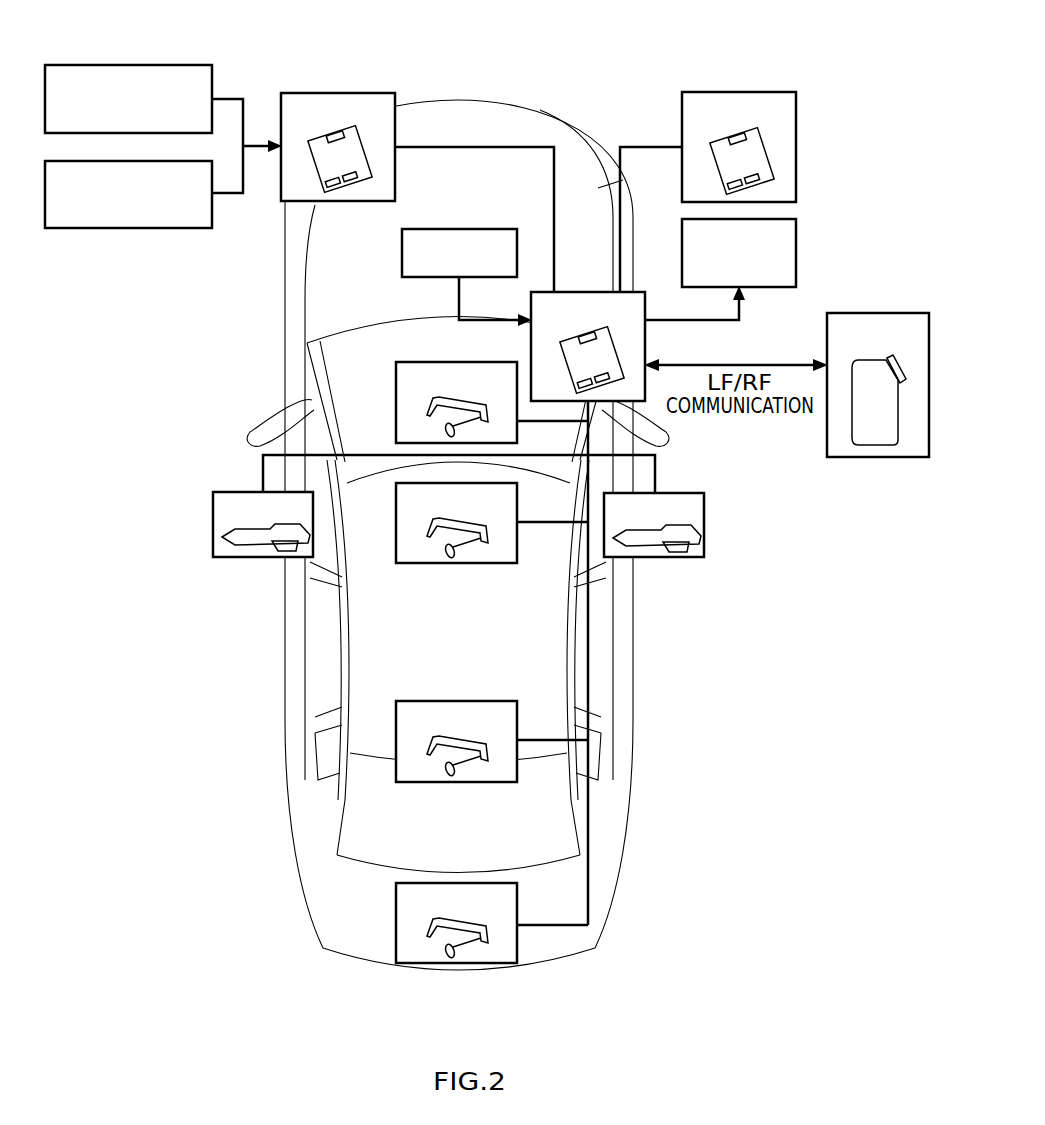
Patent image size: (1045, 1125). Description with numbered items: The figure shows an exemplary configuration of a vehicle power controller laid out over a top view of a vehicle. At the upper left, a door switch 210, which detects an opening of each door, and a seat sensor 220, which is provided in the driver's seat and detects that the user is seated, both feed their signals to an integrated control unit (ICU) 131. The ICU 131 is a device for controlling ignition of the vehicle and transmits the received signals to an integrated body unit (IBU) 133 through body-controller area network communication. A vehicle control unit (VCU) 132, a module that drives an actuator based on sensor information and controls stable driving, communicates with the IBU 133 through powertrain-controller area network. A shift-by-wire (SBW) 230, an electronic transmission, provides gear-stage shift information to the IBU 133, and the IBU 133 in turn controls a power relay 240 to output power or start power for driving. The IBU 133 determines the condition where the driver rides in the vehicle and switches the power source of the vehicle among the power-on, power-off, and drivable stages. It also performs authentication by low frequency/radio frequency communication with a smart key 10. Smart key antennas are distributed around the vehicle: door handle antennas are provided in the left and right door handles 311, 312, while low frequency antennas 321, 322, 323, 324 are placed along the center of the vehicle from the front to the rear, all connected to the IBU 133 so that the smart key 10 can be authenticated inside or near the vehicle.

The door switch 210 is at (127, 65).
The seat sensor 220 is at (128, 228).
The integrated control unit (ICU) 131 is at (335, 93).
The vehicle control unit (VCU) 132 is at (738, 92).
The shift-by-wire (SBW) 230 is at (460, 229).
The power relay 240 is at (796, 219).
The integrated body unit (IBU) 133 is at (645, 340).
The smart key 10 is at (896, 313).
The low frequency antenna 321 is at (398, 362).
The low frequency antenna 322 is at (430, 563).
The low frequency antenna 323 is at (478, 701).
The low frequency antenna 324 is at (454, 883).
The left door handle 311 is at (213, 557).
The right door handle 312 is at (703, 557).